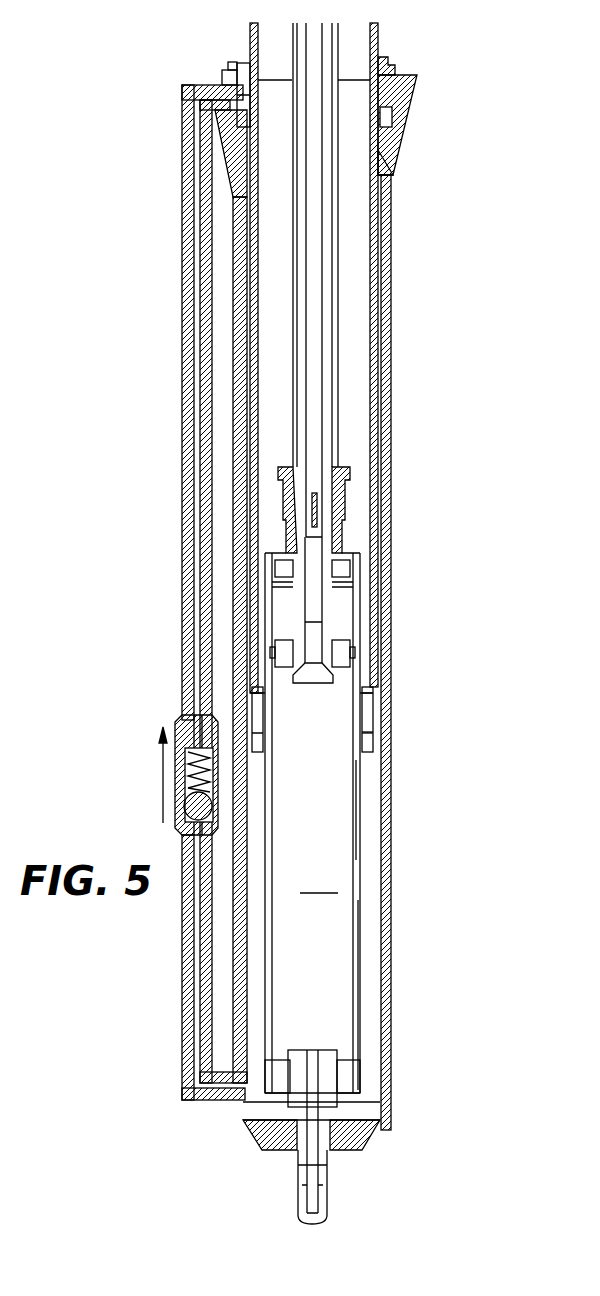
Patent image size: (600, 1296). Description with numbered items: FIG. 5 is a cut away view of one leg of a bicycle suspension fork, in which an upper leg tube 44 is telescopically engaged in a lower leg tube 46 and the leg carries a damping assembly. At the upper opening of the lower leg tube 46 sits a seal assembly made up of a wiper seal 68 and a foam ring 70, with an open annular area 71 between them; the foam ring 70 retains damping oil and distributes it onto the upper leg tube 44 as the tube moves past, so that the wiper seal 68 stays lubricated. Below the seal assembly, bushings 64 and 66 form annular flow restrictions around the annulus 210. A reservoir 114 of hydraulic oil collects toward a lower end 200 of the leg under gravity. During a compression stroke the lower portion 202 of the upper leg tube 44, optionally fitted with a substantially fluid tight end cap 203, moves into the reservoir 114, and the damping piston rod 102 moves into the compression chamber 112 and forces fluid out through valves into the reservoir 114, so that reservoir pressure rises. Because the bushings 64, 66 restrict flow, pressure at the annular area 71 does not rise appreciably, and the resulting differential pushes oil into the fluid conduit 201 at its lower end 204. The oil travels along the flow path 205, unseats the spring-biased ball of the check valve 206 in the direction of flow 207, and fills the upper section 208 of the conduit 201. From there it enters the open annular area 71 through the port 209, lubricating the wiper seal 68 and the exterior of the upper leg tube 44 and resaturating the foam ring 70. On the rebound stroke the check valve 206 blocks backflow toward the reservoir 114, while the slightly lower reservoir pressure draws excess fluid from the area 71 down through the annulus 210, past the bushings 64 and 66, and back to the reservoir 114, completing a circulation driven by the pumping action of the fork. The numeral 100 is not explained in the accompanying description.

The upper leg tube 44 is at (250, 38).
The lower leg tube 46 is at (400, 207).
The bushing 64 is at (400, 153).
The bushing 66 is at (392, 640).
The wiper seal 68 is at (387, 63).
The foam ring 70 is at (405, 122).
The open annular area 71 is at (405, 92).
The inner wall 100 is at (362, 852).
The damping piston rod 102 is at (335, 320).
The compression chamber 112 is at (319, 883).
The reservoir 114 is at (375, 990).
The lower end 200 is at (472, 1107).
The fluid conduit 201 is at (183, 937).
The lower portion of upper leg tube 202 is at (380, 720).
The end cap 203 is at (380, 760).
The lower end 204 is at (232, 1108).
The flow path 205 is at (190, 990).
The check valve 206 is at (150, 787).
The direction of flow 207 is at (160, 808).
The upper section 208 is at (183, 510).
The port 209 is at (215, 80).
The annulus 210 is at (392, 270).